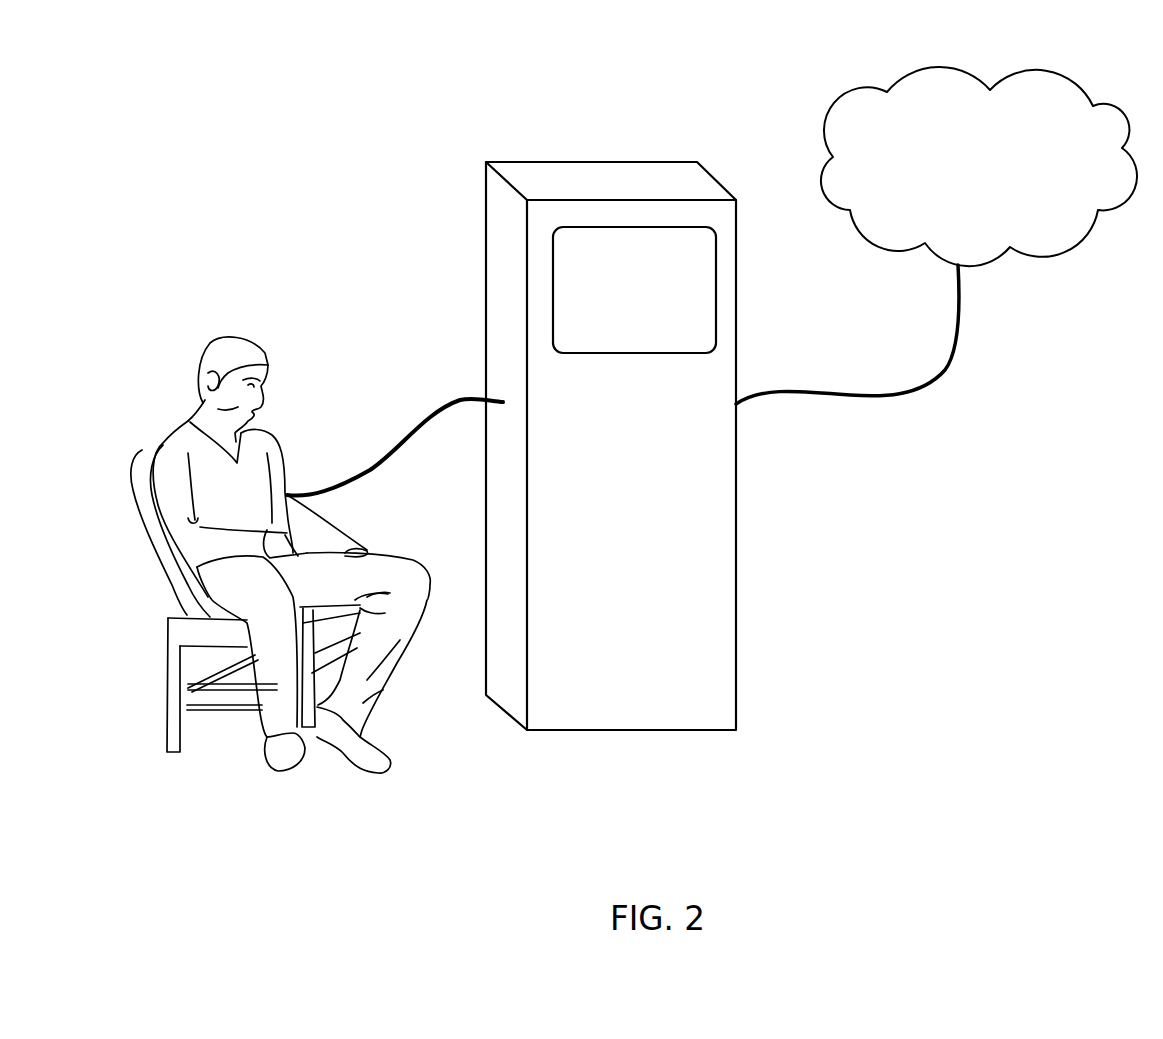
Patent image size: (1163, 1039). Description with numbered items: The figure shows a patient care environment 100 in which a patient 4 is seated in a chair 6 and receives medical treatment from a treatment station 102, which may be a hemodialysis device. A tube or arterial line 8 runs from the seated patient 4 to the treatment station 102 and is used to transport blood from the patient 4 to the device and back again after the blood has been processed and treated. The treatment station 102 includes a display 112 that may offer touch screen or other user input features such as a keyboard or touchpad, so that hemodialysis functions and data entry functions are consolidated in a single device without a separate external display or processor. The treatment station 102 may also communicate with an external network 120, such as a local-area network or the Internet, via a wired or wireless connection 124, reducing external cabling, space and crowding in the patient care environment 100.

The patient care environment 100 is at (185, 240).
The treatment station 102 is at (485, 265).
The display 112 is at (658, 281).
The external network 120 is at (905, 73).
The wired or wireless connection 124 is at (848, 398).
The arterial line 8 is at (400, 438).
The patient 4 is at (227, 333).
The chair 6 is at (150, 533).